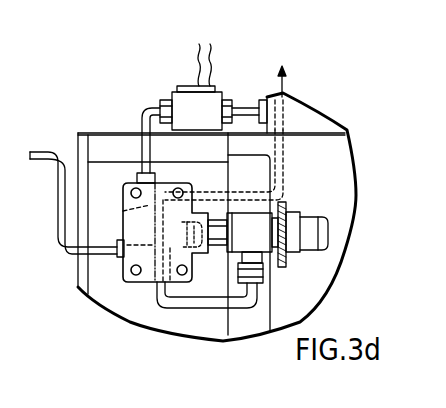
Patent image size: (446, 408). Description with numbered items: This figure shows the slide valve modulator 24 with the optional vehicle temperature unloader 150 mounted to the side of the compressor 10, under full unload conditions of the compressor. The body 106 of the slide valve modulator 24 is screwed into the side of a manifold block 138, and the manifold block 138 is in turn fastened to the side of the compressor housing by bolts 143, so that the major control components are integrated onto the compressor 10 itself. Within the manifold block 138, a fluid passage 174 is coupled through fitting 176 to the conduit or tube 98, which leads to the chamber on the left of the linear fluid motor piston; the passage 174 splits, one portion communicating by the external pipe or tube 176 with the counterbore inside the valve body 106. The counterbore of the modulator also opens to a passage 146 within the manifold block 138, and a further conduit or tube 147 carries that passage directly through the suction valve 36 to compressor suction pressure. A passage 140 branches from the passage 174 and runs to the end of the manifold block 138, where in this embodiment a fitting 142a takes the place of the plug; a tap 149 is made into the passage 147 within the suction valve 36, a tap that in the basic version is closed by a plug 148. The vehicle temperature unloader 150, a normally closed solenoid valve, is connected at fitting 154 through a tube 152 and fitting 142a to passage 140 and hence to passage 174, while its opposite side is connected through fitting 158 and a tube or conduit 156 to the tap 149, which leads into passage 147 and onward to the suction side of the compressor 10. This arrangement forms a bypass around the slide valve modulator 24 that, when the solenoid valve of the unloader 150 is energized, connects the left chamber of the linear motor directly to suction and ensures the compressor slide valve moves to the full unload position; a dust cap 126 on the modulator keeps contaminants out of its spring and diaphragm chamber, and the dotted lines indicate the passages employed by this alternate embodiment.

The compressor 10 is at (359, 183).
The slide valve modulator 24 is at (302, 207).
The suction valve 36 is at (318, 124).
The conduit or tube 98 is at (58, 167).
The valve body 106 is at (272, 250).
The dust cap 126 is at (316, 253).
The manifold block 138 is at (167, 183).
The passage 140 is at (123, 211).
The fitting 142a is at (137, 173).
The bolts 143 is at (182, 277).
The passage 146 is at (172, 287).
The conduit or tube 147 is at (285, 163).
The plug 148 is at (258, 97).
The tap 149 is at (290, 103).
The vehicle temperature unloader 150 is at (189, 78).
The tube 152 is at (140, 143).
The fitting 154 is at (163, 102).
The tube or conduit 156 is at (241, 107).
The fitting 158 is at (229, 99).
The fluid passage 174 is at (124, 262).
The fitting; pipe or tube 176 is at (217, 304).